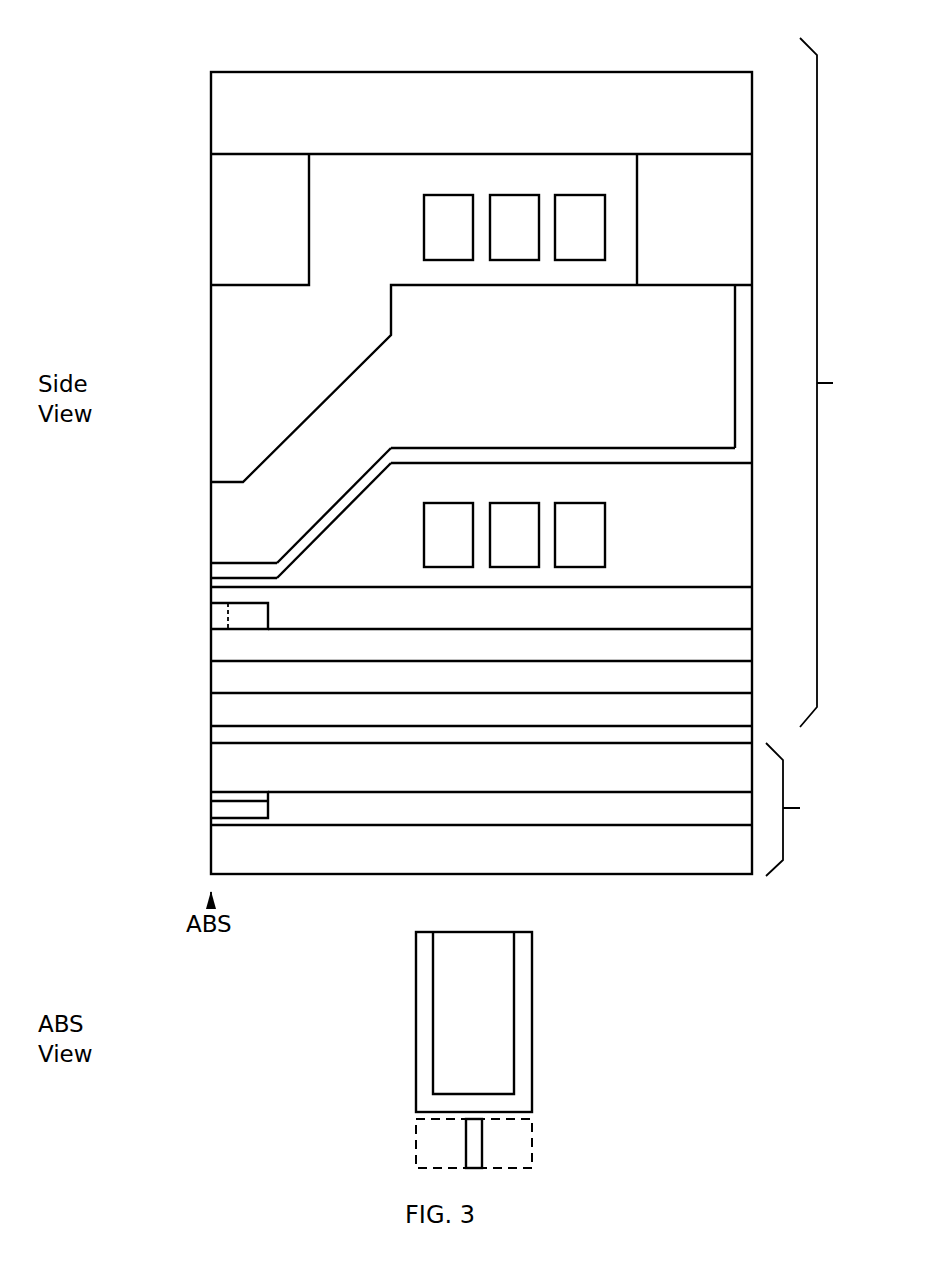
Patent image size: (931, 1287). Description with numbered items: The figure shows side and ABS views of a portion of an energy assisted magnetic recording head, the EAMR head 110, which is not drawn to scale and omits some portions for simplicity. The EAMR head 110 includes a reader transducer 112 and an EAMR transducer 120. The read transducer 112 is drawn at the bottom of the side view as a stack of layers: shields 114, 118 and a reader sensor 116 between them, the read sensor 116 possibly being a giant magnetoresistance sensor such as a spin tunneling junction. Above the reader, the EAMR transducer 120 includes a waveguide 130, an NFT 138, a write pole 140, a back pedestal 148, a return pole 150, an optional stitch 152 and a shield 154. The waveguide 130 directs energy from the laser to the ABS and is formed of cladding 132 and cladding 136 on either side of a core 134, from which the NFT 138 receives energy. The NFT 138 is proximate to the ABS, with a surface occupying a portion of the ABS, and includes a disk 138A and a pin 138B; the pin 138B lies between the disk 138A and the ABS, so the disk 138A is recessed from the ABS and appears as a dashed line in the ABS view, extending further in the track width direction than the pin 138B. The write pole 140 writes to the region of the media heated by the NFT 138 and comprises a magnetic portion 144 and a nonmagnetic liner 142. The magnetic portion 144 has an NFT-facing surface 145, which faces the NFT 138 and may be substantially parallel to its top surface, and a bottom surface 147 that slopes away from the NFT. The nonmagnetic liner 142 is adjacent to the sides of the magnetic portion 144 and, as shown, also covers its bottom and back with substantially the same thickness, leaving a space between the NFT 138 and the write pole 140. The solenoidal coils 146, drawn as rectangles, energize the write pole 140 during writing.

The EAMR head 110 is at (133, 84).
The reader transducer 112 is at (535, 809).
The shield 114 is at (211, 850).
The reader sensor 116 is at (248, 818).
The shield 118 is at (636, 792).
The EAMR transducer 120 is at (831, 382).
The waveguide 130 is at (128, 664).
The cladding 132 is at (211, 677).
The core 134 is at (752, 650).
The cladding 136 is at (752, 604).
The NFT 138 is at (175, 620).
The disk 138A is at (211, 622).
The pin 138B is at (250, 603).
The write pole 140 is at (143, 530).
The nonmagnetic liner 142 is at (211, 572).
The magnetic portion 144 is at (342, 383).
The NFT-facing surface 145 is at (245, 548).
The coil 146 is at (627, 530).
The bottom surface 147 is at (325, 492).
The back pedestal 148 is at (752, 220).
The return pole 150 is at (752, 137).
The stitch 152 is at (211, 235).
The shield 154 is at (752, 708).